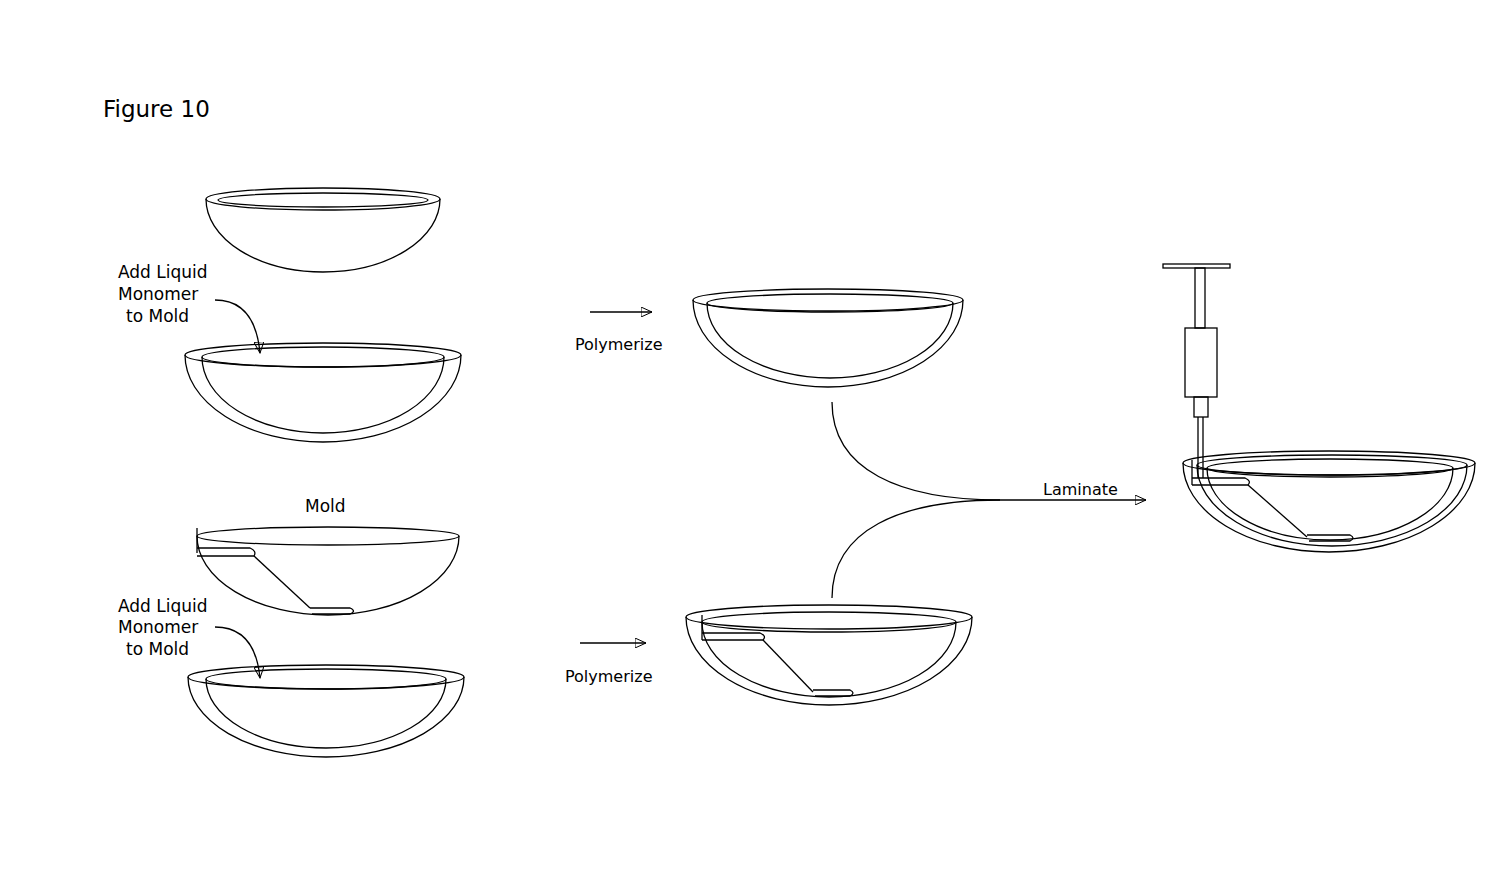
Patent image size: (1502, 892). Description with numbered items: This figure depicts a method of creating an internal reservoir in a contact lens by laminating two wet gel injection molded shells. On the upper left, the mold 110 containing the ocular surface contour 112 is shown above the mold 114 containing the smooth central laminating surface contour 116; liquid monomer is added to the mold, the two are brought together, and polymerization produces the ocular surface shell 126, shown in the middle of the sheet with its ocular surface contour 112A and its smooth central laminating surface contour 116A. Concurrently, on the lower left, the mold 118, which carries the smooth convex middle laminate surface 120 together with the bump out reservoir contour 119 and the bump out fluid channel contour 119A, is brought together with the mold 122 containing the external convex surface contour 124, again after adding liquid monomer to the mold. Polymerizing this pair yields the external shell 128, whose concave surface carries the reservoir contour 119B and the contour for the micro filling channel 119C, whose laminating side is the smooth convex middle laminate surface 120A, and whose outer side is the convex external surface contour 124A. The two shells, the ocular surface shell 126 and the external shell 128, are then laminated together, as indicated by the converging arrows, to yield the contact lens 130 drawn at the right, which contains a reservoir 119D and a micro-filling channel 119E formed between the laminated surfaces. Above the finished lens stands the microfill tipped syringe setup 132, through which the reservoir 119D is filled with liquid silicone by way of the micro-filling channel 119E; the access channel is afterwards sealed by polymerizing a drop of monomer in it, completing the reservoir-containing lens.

The mold 110 is at (323, 223).
The ocular surface contour 112 is at (436, 240).
The mold 114 is at (323, 390).
The smooth central laminating surface contour 116 is at (423, 387).
The mold 118 is at (327, 572).
The bump out reservoir contour 119 is at (275, 581).
The bump out fluid channel contour 119A is at (191, 534).
The smooth convex middle laminate surface 120 is at (436, 590).
The mold 122 is at (326, 708).
The external convex surface contour 124 is at (423, 707).
The ocular surface shell 126 is at (830, 336).
The ocular surface contour 112A is at (941, 324).
The smooth central laminating surface contour 116A is at (956, 353).
The external shell 128 is at (829, 654).
The reservoir contour 119B is at (750, 664).
The micro filling channel contour 119C is at (697, 601).
The smooth convex middle laminate surface 120A is at (940, 645).
The convex external surface contour 124A is at (952, 675).
The contact lens 130 is at (1298, 489).
The microfill tipped syringe setup 132 is at (1223, 371).
The reservoir 119D is at (1241, 519).
The micro-filling channel 119E is at (1188, 456).